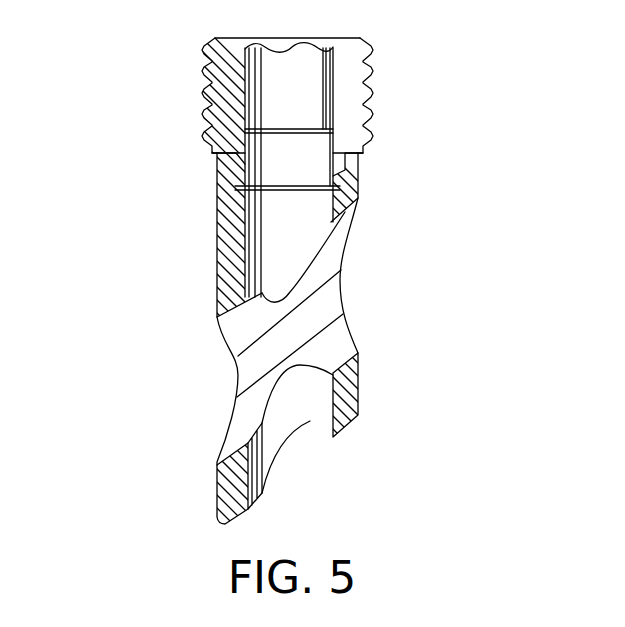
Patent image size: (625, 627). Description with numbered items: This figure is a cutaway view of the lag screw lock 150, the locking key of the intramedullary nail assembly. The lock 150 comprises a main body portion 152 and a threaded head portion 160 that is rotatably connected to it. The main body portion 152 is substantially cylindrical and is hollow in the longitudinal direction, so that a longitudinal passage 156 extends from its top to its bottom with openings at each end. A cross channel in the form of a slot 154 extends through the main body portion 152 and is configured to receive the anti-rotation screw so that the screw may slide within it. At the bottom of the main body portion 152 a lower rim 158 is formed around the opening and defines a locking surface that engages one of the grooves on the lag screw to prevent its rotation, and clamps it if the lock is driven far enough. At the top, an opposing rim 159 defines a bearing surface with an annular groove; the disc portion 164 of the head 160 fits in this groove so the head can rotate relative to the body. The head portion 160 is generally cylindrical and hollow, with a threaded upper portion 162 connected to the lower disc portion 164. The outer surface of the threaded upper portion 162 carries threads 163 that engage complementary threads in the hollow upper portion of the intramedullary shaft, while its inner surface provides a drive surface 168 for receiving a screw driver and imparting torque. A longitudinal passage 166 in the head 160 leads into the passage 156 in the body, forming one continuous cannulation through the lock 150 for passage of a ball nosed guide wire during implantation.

The lag screw lock 150 is at (421, 148).
The main body portion 152 is at (230, 223).
The slot 154 is at (262, 354).
The longitudinal passage 156 is at (292, 233).
The lower rim 158 is at (354, 431).
The opposing rim 159 is at (223, 167).
The threaded head portion 160 is at (225, 80).
The threaded upper portion 162 is at (368, 54).
The threads 163 is at (208, 122).
The disc portion 164 is at (352, 177).
The longitudinal passage 166 is at (293, 163).
The drive surface 168 is at (265, 68).